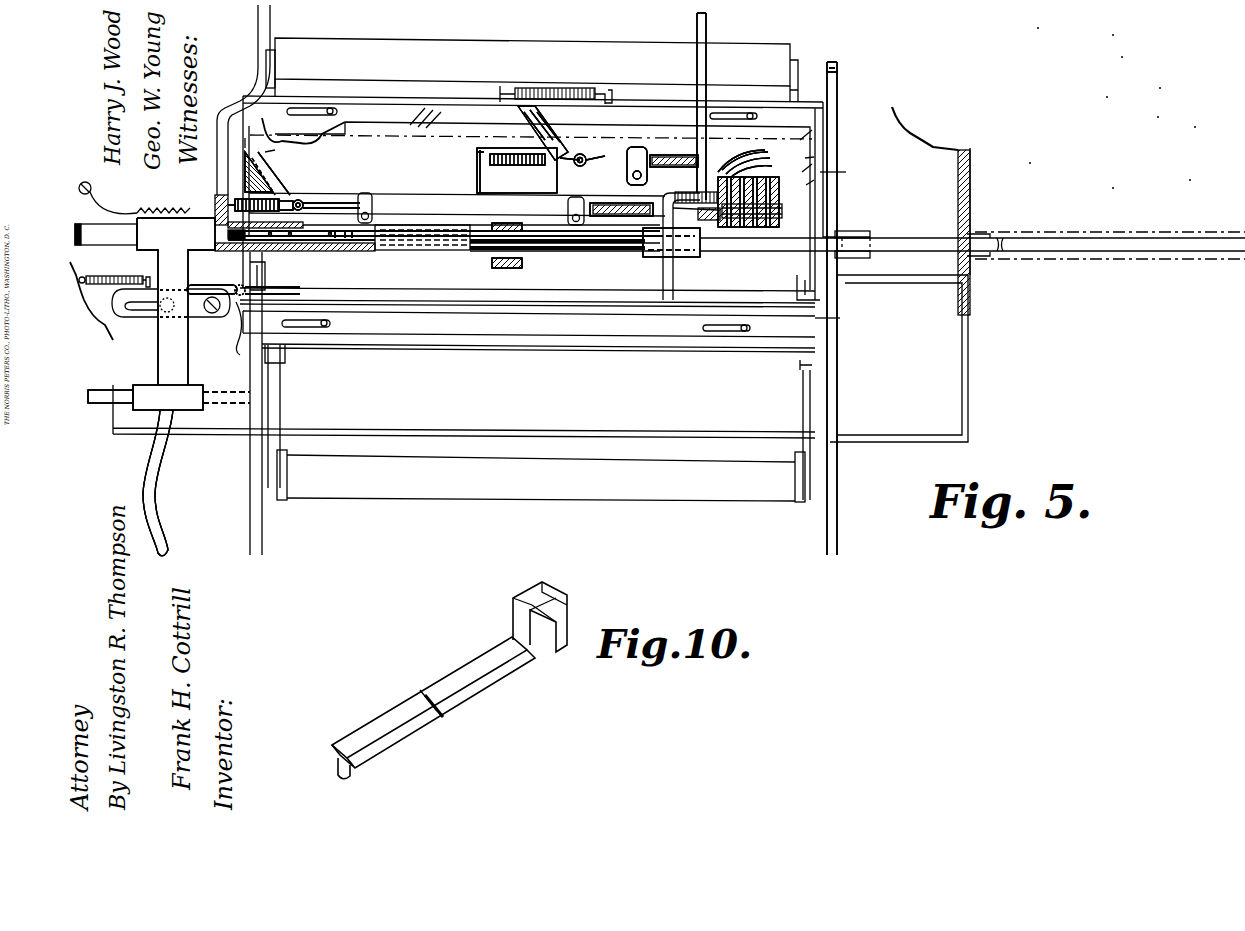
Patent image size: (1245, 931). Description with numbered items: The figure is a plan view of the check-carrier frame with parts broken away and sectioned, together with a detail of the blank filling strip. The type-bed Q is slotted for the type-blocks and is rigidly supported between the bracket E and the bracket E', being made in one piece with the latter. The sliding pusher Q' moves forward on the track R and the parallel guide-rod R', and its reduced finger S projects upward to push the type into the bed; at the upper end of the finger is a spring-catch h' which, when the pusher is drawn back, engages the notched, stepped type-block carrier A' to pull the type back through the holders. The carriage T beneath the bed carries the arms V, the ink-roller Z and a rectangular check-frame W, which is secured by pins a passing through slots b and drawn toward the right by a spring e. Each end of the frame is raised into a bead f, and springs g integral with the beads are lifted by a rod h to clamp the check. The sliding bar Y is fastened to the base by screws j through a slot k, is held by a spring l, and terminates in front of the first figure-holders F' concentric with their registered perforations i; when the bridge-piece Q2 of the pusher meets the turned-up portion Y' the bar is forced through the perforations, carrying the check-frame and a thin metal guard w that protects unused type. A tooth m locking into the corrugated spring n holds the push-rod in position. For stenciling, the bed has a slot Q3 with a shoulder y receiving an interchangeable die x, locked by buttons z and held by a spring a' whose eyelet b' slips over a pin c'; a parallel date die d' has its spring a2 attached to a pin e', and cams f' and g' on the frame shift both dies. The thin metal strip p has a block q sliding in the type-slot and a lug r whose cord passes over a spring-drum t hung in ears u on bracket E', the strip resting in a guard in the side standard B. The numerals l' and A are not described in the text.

In FIG. 5, the ink-roller Z is at (532, 70).
In FIG. 5, the check-frame W is at (585, 360).
In FIG. 5, the bracket E is at (230, 280).
In FIG. 5, the bracket E' is at (767, 283).
In FIG. 5, the spring e is at (556, 81).
In FIG. 5, the pin e' is at (465, 171).
In FIG. 5, the pins a is at (530, 240).
In FIG. 5, the slots b is at (527, 223).
In FIG. 5, the bead f is at (542, 242).
In FIG. 5, the cam f' is at (269, 168).
In FIG. 5, the springs g is at (535, 279).
In FIG. 5, the cam g' is at (554, 146).
In FIG. 5, the die d' is at (573, 133).
In FIG. 5, the spring a' is at (264, 188).
In FIG. 5, the spring a2 is at (498, 168).
In FIG. 5, the eyelet b' is at (303, 187).
In FIG. 5, the pin c' is at (326, 187).
In FIG. 5, the buttons z is at (364, 193).
In FIG. 5, the slot Q3 is at (400, 192).
In FIG. 5, the shoulder y is at (672, 163).
In FIG. 5, the interchangeable die x is at (457, 204).
In FIG. 5, the spring-catch h' is at (444, 254).
In FIG. 5, the rod h is at (529, 399).
In FIG. 5, the finger S is at (226, 234).
In FIG. 5, the type-bed Q is at (407, 251).
In FIG. 5, the sliding pusher Q' is at (176, 387).
In FIG. 5, the bridge-piece Q2 is at (162, 378).
In FIG. 5, the type-block carrier A' is at (537, 253).
In FIG. 5, the spring l is at (114, 271).
In FIG. 5, the block l' is at (521, 249).
In FIG. 5, the sliding bar Y is at (647, 246).
In FIG. 5, the turned-up portion Y' is at (243, 276).
In FIG. 5, the metal guard w is at (710, 192).
In FIG. 5, the figure-holders F' is at (751, 187).
In FIG. 5, the perforations i is at (752, 228).
In FIG. 5, the thin metal strip p is at (720, 252).
In FIG. 10, the thin metal strip p is at (475, 696).
In FIG. 5, the ears u is at (858, 231).
In FIG. 5, the spring-drum t is at (870, 236).
In FIG. 5, the track R is at (104, 222).
In FIG. 5, the guide-rod R' is at (105, 376).
In FIG. 5, the tooth m is at (112, 194).
In FIG. 5, the spring n is at (170, 207).
In FIG. 5, the slot k is at (145, 305).
In FIG. 5, the screws j is at (210, 314).
In FIG. 5, the carriage T is at (470, 350).
In FIG. 5, the arms V is at (727, 492).
In FIG. 5, the casing A is at (900, 295).
In FIG. 5, the side standard B is at (956, 292).
In FIG. 10, the block q is at (557, 630).
In FIG. 10, the lug r is at (343, 778).